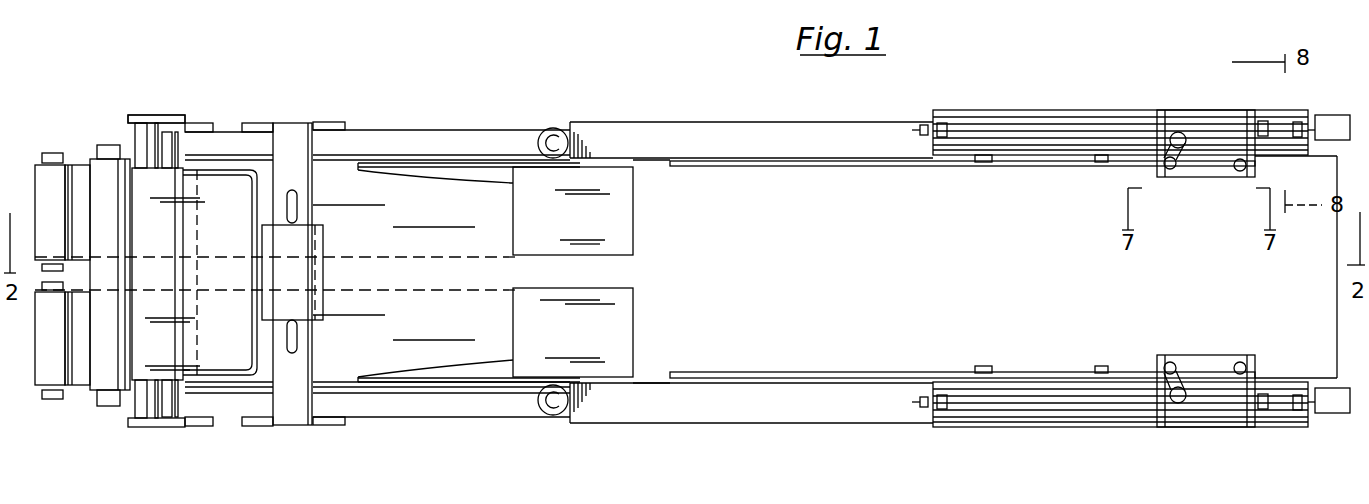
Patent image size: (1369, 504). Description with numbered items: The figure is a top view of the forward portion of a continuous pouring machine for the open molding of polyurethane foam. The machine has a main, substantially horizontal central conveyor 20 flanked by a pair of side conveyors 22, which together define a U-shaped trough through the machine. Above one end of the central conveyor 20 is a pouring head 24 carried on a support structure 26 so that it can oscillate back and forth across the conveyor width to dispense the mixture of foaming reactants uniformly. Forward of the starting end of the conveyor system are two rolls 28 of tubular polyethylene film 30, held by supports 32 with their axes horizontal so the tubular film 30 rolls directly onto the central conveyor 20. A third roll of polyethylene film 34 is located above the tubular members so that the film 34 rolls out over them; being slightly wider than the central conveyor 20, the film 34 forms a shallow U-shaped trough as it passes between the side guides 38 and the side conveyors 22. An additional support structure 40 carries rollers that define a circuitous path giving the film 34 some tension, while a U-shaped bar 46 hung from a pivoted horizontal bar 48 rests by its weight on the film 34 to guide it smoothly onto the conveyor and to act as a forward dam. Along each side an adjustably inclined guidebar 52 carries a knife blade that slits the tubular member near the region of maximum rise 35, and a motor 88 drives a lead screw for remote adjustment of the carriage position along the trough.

The central conveyor 20 is at (401, 268).
The side conveyors 22 is at (546, 130).
The pouring head 24 is at (306, 247).
The support structure 26 is at (313, 128).
The rolls of tubular polyethylene film 28 is at (40, 170).
The tubular polyethylene film 30 is at (78, 168).
The supports 32 is at (55, 398).
The polyethylene film 34 is at (100, 165).
The region of maximum rise 35 is at (1125, 367).
The side guides 38 is at (443, 165).
The additional support structure 40 is at (152, 428).
The U-shaped bar 46 is at (228, 382).
The pivoted horizontal bar 48 is at (178, 222).
The guidebar 52 is at (802, 167).
The motor 88 is at (1335, 118).